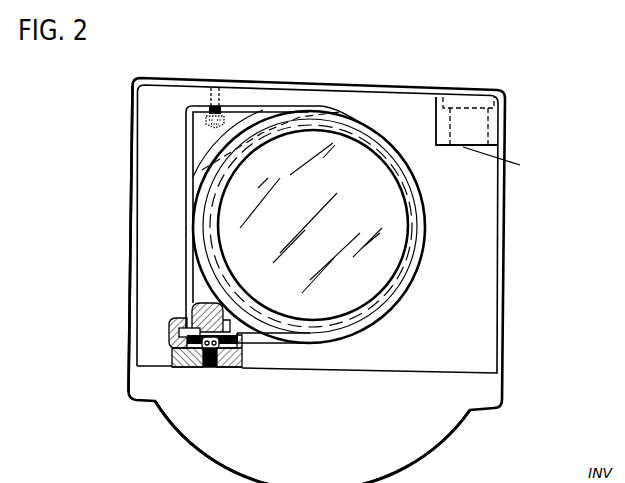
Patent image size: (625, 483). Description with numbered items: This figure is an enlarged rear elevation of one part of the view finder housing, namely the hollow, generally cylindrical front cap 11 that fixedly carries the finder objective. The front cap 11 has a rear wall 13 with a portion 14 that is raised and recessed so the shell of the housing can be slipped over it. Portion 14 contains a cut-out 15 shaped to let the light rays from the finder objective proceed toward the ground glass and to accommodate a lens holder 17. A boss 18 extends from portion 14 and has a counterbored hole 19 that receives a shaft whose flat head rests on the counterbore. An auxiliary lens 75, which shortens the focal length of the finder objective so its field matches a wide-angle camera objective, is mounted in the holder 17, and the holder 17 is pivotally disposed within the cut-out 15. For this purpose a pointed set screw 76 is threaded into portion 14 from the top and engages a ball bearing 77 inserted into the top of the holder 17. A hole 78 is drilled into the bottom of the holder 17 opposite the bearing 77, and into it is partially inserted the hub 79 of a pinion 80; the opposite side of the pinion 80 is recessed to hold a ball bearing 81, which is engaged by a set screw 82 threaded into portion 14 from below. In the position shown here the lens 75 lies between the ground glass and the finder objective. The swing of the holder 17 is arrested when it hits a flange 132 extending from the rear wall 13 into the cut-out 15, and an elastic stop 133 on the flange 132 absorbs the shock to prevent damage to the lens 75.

The front cap 11 is at (402, 431).
The rear wall 13 is at (507, 210).
The portion 14 is at (137, 345).
The cut-out 15 is at (427, 257).
The lens holder 17 is at (388, 305).
The boss 18 is at (518, 162).
The counterbored hole 19 is at (469, 123).
The auxiliary lens 75 is at (384, 207).
The pointed set screw 76 is at (217, 90).
The ball bearing 77 is at (190, 112).
The hole 78 is at (192, 303).
The hub 79 is at (177, 327).
The pinion 80 is at (180, 360).
The ball bearing 81 is at (182, 367).
The set screw 82 is at (208, 368).
The flange 132 is at (260, 132).
The stop 133 is at (326, 122).